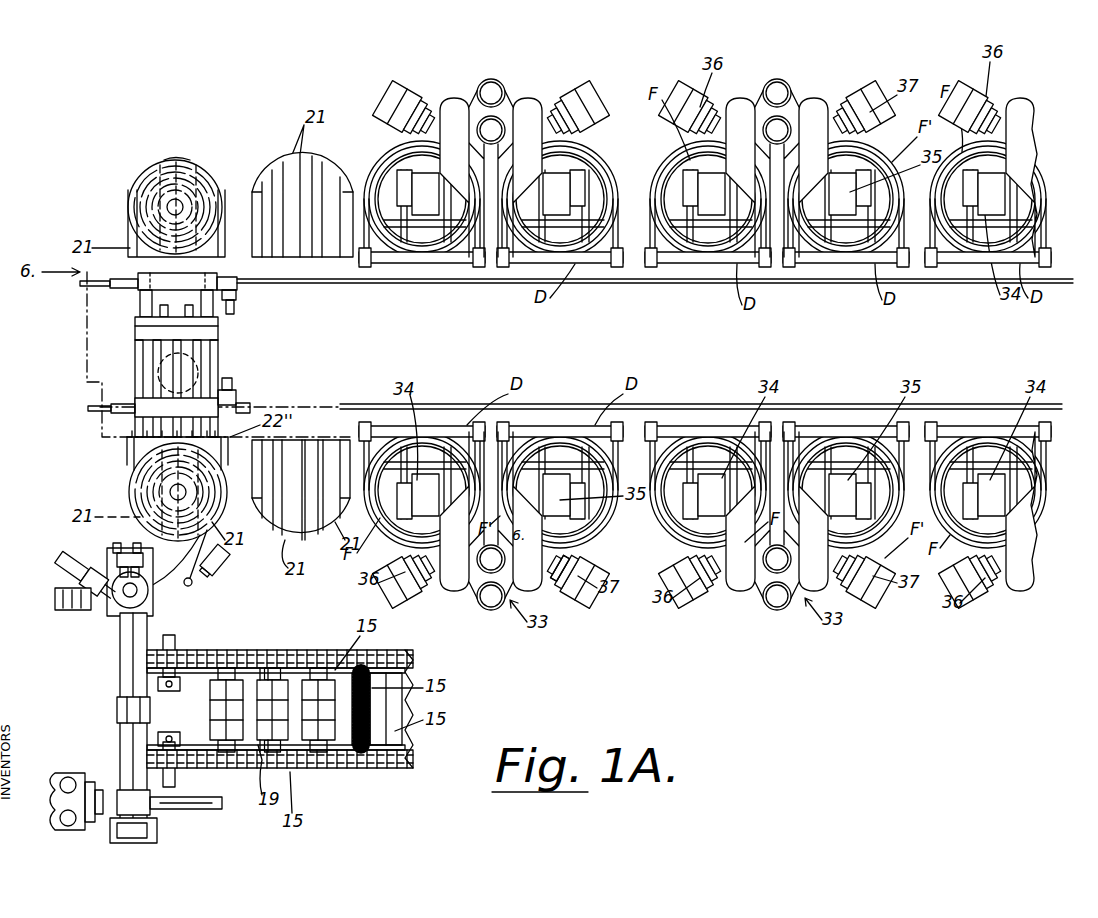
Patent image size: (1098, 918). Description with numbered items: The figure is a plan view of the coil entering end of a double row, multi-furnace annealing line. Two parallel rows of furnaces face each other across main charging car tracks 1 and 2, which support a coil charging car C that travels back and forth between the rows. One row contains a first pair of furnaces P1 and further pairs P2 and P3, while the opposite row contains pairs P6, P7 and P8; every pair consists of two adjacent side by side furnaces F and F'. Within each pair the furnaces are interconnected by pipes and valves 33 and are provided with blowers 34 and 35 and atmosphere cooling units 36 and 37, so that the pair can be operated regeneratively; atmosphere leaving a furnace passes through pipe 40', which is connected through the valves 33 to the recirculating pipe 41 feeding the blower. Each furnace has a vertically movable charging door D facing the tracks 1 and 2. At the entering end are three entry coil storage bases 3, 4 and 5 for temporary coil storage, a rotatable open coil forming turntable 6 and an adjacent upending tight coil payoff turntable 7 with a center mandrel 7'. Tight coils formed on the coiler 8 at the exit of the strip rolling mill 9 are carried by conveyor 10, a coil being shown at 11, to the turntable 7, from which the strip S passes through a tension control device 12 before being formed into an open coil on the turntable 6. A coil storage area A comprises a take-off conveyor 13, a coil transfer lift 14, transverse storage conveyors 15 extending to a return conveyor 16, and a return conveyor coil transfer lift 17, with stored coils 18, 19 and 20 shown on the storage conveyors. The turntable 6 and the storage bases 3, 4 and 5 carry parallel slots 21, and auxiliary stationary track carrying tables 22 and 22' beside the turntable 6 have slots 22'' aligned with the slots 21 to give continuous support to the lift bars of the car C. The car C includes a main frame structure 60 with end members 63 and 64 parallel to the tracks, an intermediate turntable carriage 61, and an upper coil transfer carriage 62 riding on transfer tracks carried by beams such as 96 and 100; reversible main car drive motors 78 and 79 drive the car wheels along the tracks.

The main charging car track 1 is at (430, 284).
The main charging car track 2 is at (445, 404).
The entry coil storage base 3 is at (310, 445).
The entry coil storage base 4 is at (332, 165).
The entry coil storage base 5 is at (158, 168).
The open coil forming turntable 6 is at (130, 484).
The tight coil supporting payoff turntable 7 is at (145, 579).
The center mandrel 7' is at (86, 594).
The coiler 8 is at (147, 833).
The strip rolling mill 9 is at (92, 778).
The conveyor 10 is at (118, 666).
The coil 11 is at (118, 711).
The tension control device 12 is at (200, 578).
The take-off conveyor 13 is at (232, 772).
The coil transfer lift 14 is at (178, 783).
The transverse storage conveyors 15 is at (243, 668).
The return conveyor 16 is at (292, 652).
The return conveyor coil transfer lift 17 is at (176, 645).
The coil 18 is at (212, 735).
The coil 19 is at (270, 675).
The coil 20 is at (340, 712).
The parallel slots 21 is at (200, 162).
The auxiliary stationary track carrying table 22 is at (148, 453).
The auxiliary stationary track carrying table 22' is at (220, 546).
The slots 22'' is at (144, 437).
The pipes and valves 33 is at (510, 96).
The blower 34 is at (418, 198).
The blower 35 is at (565, 192).
The atmosphere cooling unit 36 is at (400, 113).
The atmosphere cooling unit 37 is at (585, 112).
The pipe 40' is at (595, 566).
The recirculating pipe 41 is at (548, 514).
The main frame structure 60 is at (133, 302).
The intermediate turntable carriage 61 is at (175, 314).
The upper coil transfer carriage 62 is at (130, 343).
The end member 63 is at (205, 280).
The end member 64 is at (205, 390).
The main car drive motor 78 is at (236, 299).
The main car drive motor 79 is at (236, 393).
The transfer car track supporting beam 96 is at (240, 410).
The transfer car track supporting beam 100 is at (110, 408).
The coil storage area A is at (315, 779).
The coil charging car C is at (128, 367).
The charging door D is at (395, 264).
The furnace F is at (366, 163).
The furnace F' is at (618, 142).
The strip S is at (180, 580).
The first pair of furnaces P1 is at (499, 613).
The pair of furnaces P2 is at (784, 613).
The pair of furnaces P3 is at (1029, 600).
The pair of furnaces P6 is at (502, 83).
The pair of furnaces P7 is at (788, 76).
The pair of furnaces P8 is at (1034, 83).